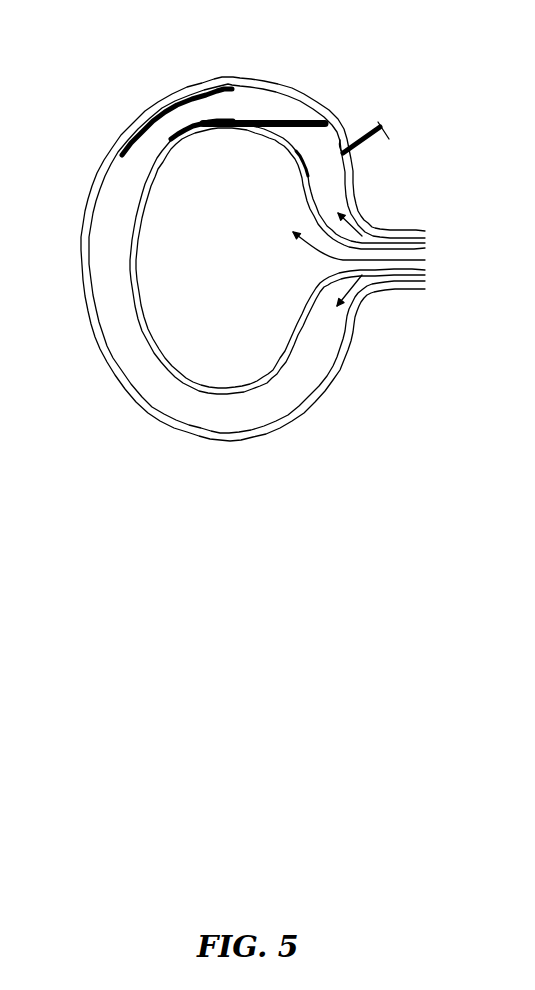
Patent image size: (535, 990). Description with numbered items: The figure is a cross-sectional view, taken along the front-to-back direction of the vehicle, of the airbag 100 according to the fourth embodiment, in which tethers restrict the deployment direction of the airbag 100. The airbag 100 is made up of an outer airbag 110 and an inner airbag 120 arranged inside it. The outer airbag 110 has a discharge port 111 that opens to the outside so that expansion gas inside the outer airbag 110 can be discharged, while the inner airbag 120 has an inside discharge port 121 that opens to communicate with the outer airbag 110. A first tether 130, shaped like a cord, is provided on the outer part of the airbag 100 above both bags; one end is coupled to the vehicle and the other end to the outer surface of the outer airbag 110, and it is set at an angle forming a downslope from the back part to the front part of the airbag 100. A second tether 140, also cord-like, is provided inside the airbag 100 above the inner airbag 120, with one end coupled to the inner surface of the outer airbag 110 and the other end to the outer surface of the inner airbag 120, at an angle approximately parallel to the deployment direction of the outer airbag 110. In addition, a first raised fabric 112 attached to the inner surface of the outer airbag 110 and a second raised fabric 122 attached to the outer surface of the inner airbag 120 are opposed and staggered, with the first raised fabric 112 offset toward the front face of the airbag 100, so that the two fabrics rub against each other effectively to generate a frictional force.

The airbag 100 is at (341, 53).
The outer airbag 110 is at (88, 194).
The discharge port 111 is at (258, 434).
The first raised fabric 112 is at (107, 143).
The inner airbag 120 is at (280, 143).
The inside discharge port 121 is at (275, 372).
The second raised fabric 122 is at (293, 175).
The first tether 130 is at (370, 128).
The second tether 140 is at (290, 120).